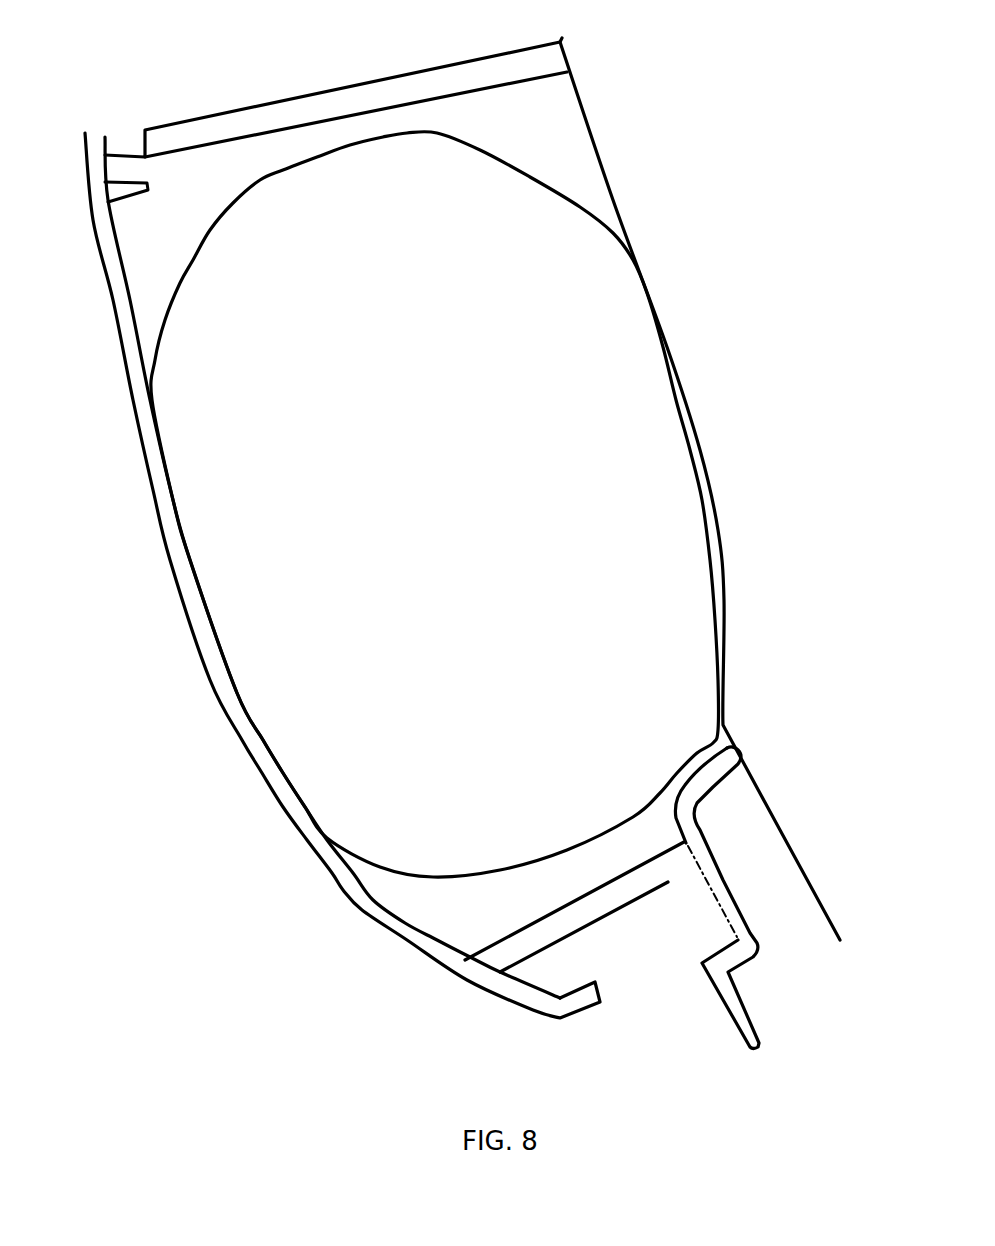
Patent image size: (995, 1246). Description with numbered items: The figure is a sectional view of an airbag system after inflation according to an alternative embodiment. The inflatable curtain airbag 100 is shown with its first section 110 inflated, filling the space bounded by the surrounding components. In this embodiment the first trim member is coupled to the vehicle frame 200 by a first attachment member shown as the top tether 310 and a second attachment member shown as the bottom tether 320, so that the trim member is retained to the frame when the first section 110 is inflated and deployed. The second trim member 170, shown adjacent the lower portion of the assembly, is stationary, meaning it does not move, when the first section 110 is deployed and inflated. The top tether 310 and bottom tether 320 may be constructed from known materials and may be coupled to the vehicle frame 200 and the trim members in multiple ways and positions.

The airbag 100 is at (207, 710).
The first section 110 is at (588, 397).
The second trim member 170 is at (755, 970).
The vehicle frame 200 is at (631, 200).
The top tether 310 is at (389, 78).
The bottom tether 320 is at (662, 896).